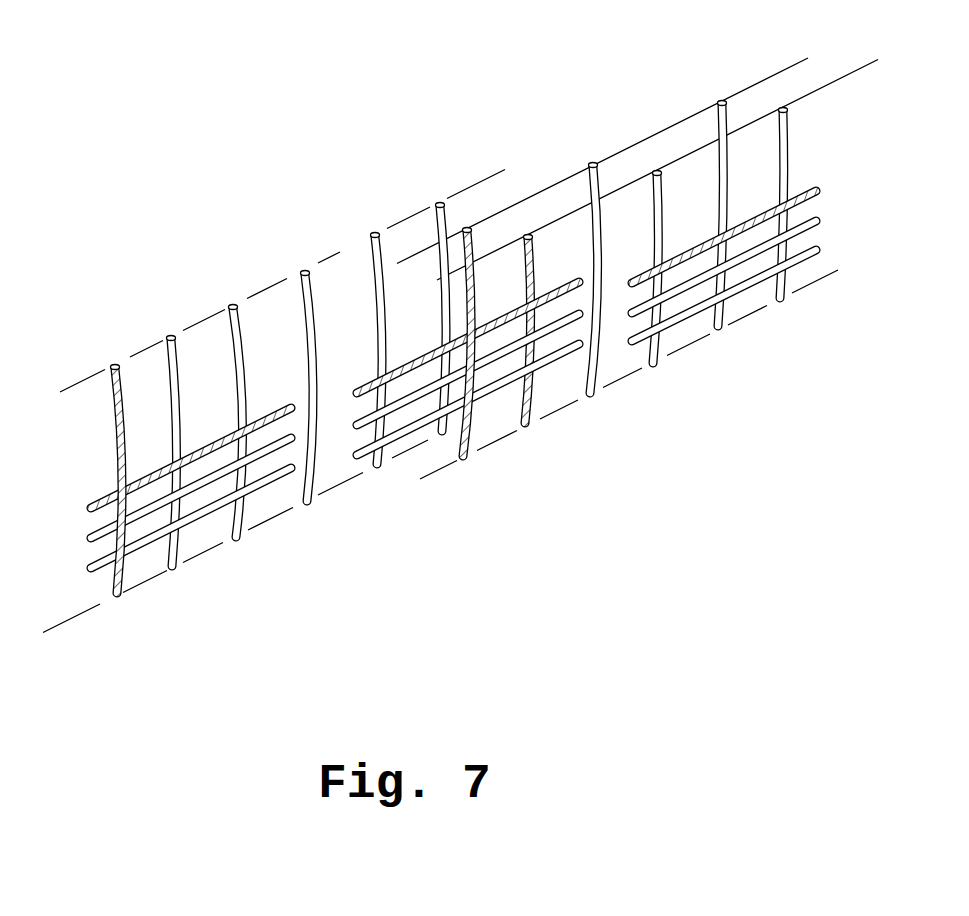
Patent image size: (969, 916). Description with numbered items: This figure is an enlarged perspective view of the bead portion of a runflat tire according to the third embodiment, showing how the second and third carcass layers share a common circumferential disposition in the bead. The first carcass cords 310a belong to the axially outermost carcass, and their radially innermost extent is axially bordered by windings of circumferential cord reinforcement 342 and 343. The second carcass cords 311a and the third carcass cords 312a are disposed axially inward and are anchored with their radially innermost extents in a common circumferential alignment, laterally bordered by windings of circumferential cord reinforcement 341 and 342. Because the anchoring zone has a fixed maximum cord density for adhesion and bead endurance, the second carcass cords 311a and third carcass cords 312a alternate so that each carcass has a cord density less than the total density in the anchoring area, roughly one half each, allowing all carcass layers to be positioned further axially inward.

The first carcass cords 310a is at (65, 407).
The second carcass cords 311a is at (478, 240).
The third carcass cords 312a is at (543, 279).
The circumferential cord reinforcement 341 is at (673, 425).
The circumferential cord reinforcement 342 is at (409, 557).
The circumferential cord reinforcement 343 is at (202, 617).